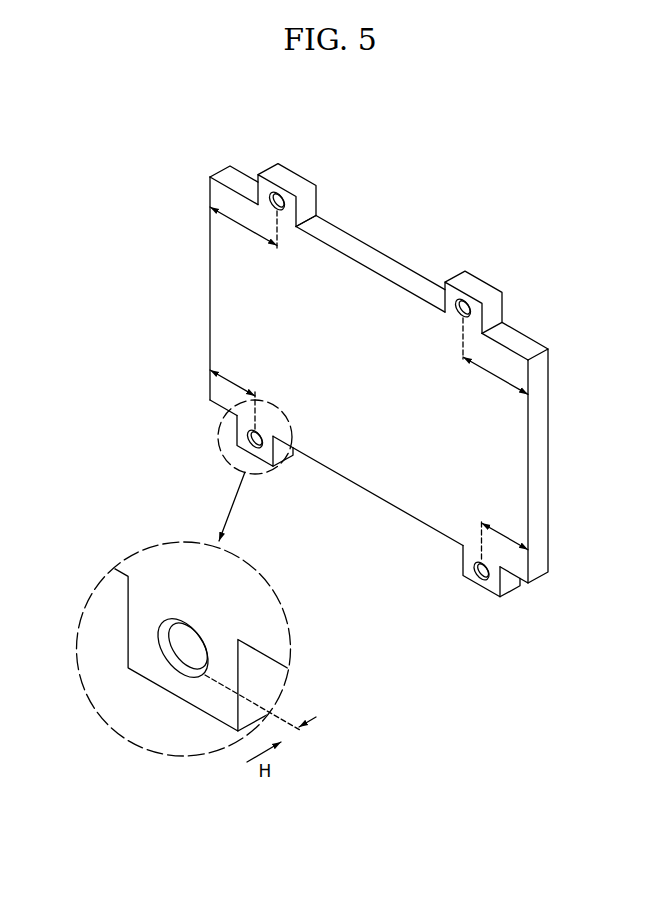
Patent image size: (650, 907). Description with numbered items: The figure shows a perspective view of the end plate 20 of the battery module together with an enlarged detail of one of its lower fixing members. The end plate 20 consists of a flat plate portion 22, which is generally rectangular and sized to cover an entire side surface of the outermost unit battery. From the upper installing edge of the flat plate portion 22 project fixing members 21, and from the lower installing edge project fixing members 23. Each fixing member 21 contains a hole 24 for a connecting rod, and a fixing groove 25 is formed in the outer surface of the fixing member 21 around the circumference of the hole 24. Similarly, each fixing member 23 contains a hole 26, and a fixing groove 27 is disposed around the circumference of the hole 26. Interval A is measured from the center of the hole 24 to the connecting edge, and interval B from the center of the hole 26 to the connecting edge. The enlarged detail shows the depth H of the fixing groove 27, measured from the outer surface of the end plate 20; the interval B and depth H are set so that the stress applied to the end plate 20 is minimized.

The end plate 20 is at (349, 359).
The fixing member 21 is at (293, 176).
The flat plate portion 22 is at (221, 274).
The fixing member 23 is at (140, 612).
The hole 24 is at (277, 206).
The fixing groove 25 is at (315, 212).
The hole 26 is at (170, 621).
The fixing groove 27 is at (182, 677).